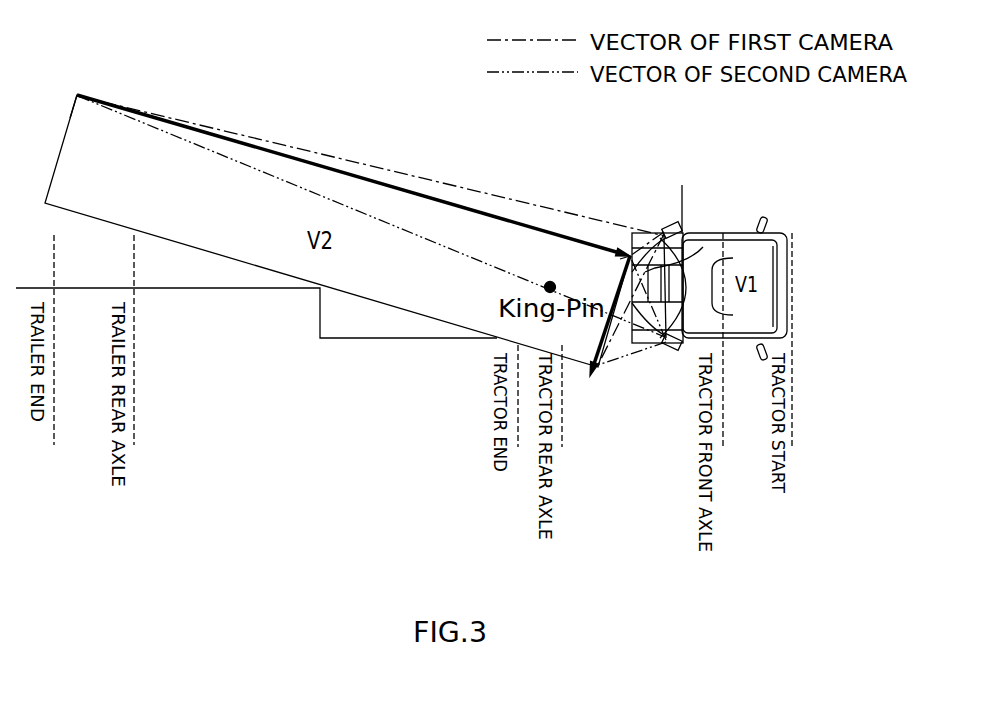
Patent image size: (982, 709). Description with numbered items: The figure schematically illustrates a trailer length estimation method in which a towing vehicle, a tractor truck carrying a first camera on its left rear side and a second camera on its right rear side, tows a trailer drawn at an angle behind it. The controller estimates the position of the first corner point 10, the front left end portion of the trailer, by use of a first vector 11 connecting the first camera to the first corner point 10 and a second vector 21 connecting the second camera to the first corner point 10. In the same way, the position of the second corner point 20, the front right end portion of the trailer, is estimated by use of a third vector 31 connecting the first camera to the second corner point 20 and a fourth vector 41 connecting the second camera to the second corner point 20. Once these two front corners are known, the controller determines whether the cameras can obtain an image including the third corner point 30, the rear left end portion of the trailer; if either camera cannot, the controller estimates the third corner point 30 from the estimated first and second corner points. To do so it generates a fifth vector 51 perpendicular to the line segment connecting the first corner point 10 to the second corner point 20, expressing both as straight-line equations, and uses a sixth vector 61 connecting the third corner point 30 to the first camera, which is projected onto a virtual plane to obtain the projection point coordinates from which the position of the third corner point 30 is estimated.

The first corner point 10 is at (627, 248).
The second corner point 20 is at (591, 380).
The third corner point 30 is at (76, 88).
The first vector 11 is at (680, 240).
The second vector 21 is at (680, 338).
The third vector 31 is at (703, 247).
The fourth vector 41 is at (670, 360).
The fifth vector 51 is at (362, 177).
The sixth vector 61 is at (478, 188).